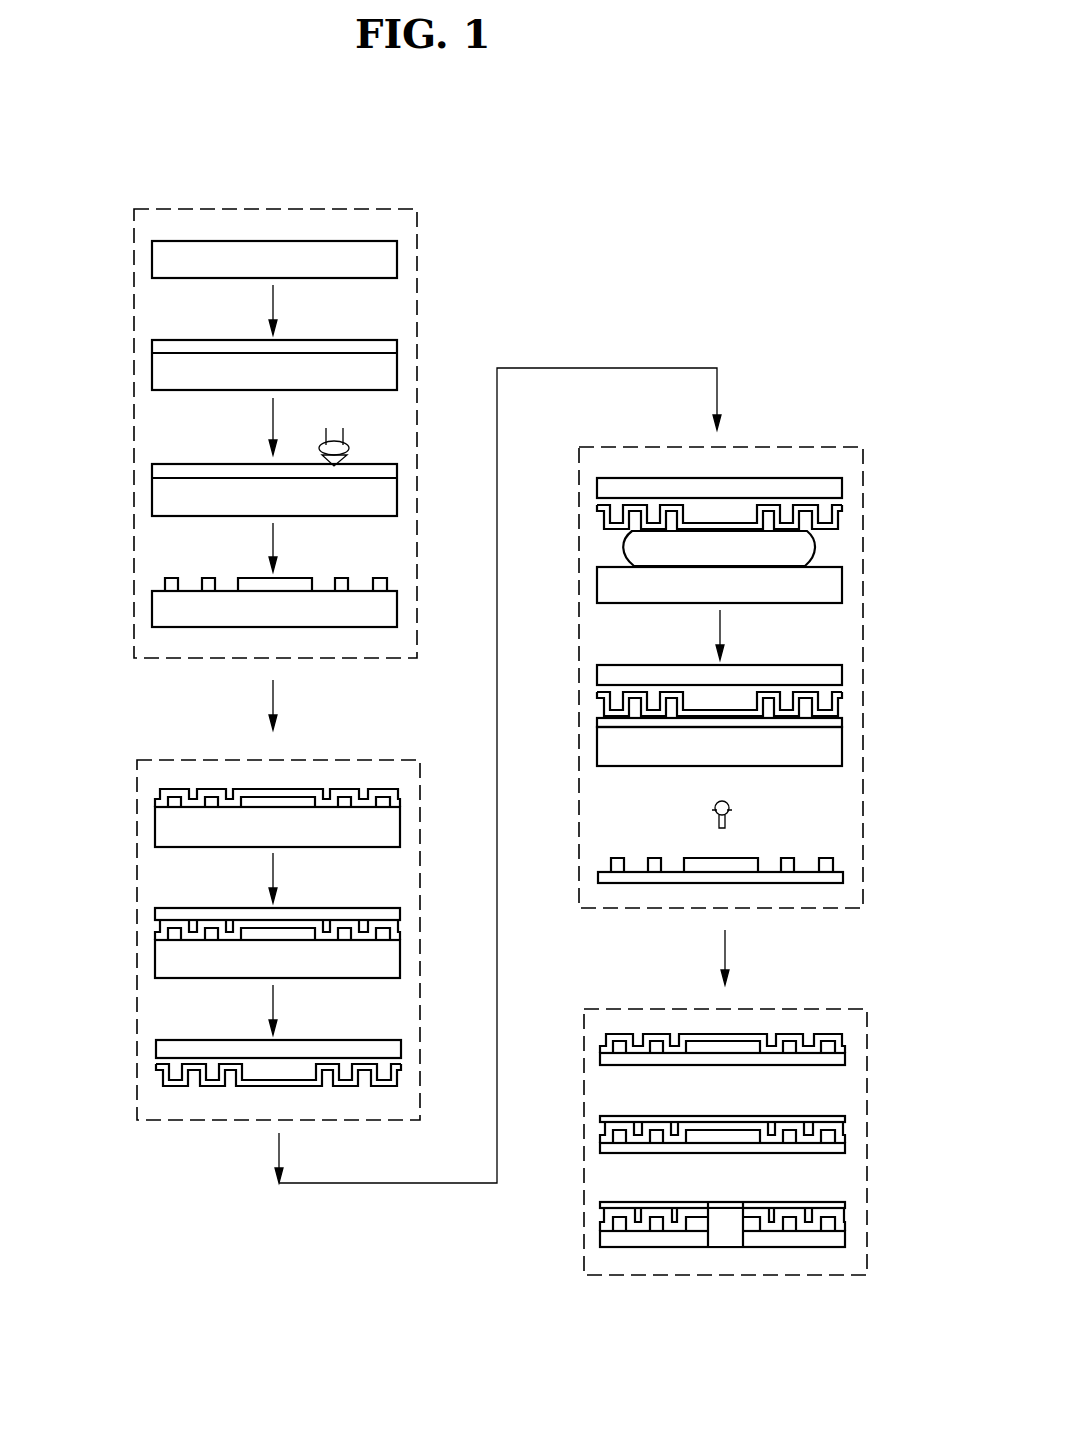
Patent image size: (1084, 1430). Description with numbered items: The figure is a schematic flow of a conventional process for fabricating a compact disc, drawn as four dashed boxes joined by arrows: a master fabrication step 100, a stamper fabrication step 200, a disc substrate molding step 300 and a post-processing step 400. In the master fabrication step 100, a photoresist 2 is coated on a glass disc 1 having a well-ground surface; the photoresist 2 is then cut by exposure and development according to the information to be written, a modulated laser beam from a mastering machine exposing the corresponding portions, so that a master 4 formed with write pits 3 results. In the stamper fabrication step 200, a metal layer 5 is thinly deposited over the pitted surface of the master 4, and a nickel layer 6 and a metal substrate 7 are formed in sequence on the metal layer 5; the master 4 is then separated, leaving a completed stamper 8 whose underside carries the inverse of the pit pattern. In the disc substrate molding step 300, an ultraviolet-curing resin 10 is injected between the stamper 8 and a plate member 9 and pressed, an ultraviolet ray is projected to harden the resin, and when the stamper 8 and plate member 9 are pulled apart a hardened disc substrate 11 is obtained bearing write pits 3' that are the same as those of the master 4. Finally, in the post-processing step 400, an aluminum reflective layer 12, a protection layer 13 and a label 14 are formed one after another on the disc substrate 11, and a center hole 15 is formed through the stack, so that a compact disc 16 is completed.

The glass disc 1 is at (175, 238).
The photoresist 2 is at (150, 345).
The write pits 3 is at (238, 560).
The master 4 is at (150, 626).
The metal layer 5 is at (172, 786).
The nickel layer 6 is at (152, 913).
The metal substrate 7 is at (154, 1048).
The stamper 8 is at (157, 1086).
The plate member 9 is at (846, 591).
The ultraviolet-curing resin 10 is at (808, 545).
The disc substrate 11 is at (858, 882).
The write pits 3' is at (762, 840).
The aluminum reflective layer 12 is at (843, 1036).
The protection layer 13 is at (850, 1116).
The label 14 is at (846, 1206).
The center hole 15 is at (727, 1240).
The compact disc 16 is at (848, 1246).
The master fabrication step 100 is at (341, 206).
The stamper fabrication step 200 is at (193, 1128).
The disc substrate molding step 300 is at (779, 440).
The post-processing step 400 is at (615, 1280).